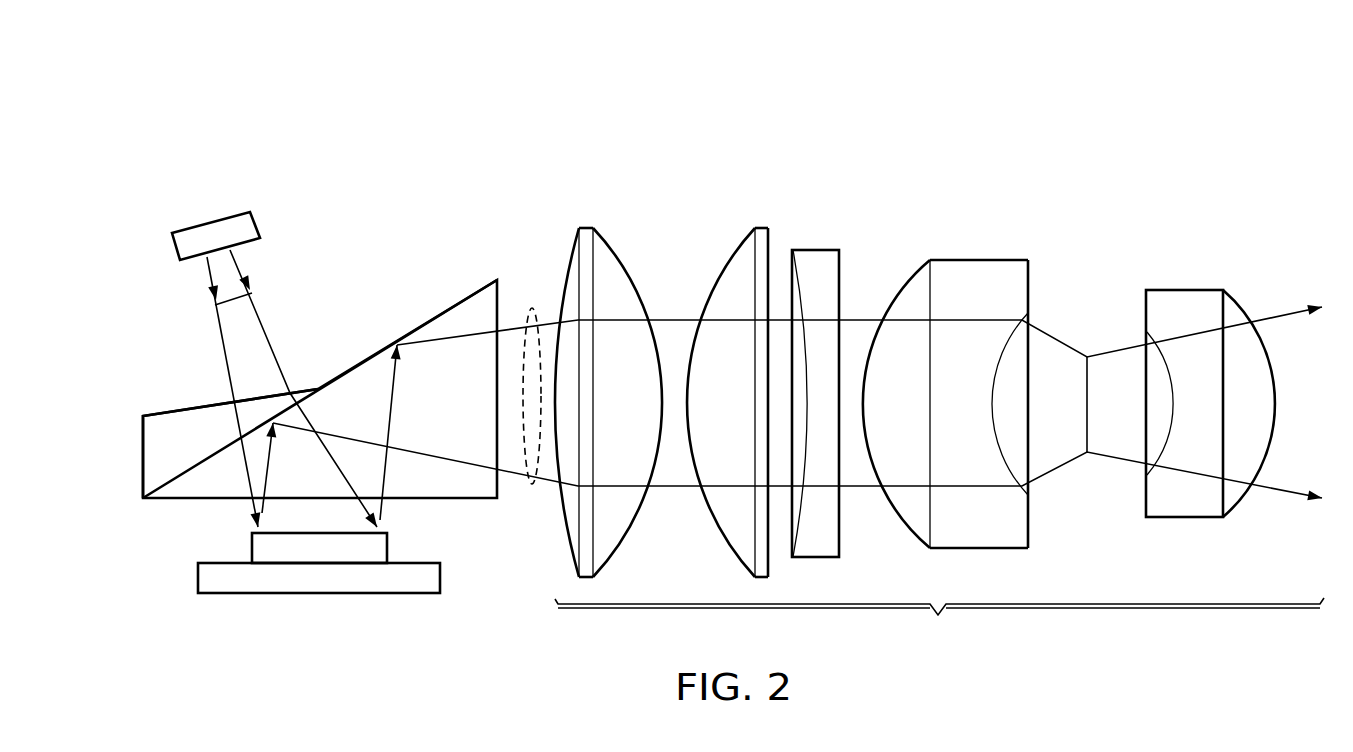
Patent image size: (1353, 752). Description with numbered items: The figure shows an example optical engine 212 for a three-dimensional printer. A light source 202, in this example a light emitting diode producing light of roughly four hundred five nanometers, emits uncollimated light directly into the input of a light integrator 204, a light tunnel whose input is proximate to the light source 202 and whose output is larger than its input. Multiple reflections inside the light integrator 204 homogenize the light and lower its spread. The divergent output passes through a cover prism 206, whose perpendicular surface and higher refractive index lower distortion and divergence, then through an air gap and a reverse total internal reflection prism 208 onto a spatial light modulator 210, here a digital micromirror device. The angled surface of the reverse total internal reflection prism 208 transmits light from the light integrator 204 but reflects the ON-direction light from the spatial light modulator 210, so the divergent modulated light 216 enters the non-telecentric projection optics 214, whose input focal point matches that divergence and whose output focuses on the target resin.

The light source 202 is at (210, 222).
The light integrator 204 is at (268, 332).
The cover prism 206 is at (190, 407).
The reverse total internal reflection prism 208 is at (442, 315).
The spatial light modulator 210 is at (318, 595).
The optical engine 212 is at (514, 93).
The projection optics 214 is at (939, 441).
The modulated light 216 is at (532, 308).